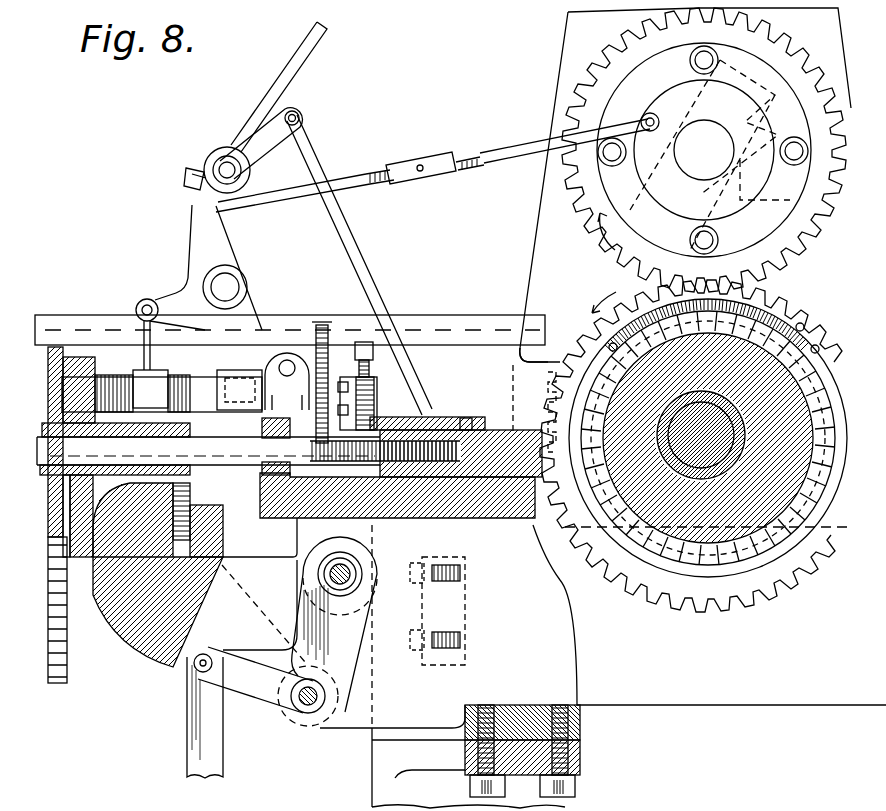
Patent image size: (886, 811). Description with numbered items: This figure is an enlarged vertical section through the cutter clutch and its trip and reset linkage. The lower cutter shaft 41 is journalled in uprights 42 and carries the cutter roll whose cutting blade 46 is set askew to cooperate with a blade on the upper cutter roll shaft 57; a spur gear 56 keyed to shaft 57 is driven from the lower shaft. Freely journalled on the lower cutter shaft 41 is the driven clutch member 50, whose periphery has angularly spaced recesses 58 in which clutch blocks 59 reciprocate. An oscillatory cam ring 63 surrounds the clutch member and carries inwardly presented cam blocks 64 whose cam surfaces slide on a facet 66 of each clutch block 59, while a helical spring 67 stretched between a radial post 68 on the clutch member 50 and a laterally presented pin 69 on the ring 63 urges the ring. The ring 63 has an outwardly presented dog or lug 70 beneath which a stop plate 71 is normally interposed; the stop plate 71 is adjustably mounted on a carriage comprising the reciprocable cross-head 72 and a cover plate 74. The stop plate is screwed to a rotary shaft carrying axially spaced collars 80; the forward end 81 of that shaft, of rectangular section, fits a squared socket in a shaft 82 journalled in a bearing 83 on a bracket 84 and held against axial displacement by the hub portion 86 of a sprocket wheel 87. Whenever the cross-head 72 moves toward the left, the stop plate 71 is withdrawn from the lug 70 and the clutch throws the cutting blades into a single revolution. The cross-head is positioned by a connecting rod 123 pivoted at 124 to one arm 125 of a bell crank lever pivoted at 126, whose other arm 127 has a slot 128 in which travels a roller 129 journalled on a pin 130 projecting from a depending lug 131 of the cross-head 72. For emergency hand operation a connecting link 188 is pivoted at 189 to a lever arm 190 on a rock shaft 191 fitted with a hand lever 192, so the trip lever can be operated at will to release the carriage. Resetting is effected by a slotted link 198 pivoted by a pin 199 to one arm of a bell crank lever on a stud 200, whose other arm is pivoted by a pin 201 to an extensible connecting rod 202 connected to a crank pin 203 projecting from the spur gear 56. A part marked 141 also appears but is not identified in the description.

The lower cutter shaft 41 is at (818, 572).
The uprights 42 is at (553, 107).
The cutting blade 46 is at (821, 350).
The driven clutch member 50 is at (690, 590).
The spur gear 56 is at (704, 150).
The upper cutter roll shaft 57 is at (704, 150).
The peripheral grooves or recesses 58 is at (575, 388).
The clutch blocks 59 is at (730, 592).
The oscillatory cam ring 63 is at (815, 558).
The cam blocks 64 is at (655, 585).
The facet 66 is at (626, 570).
The helical spring 67 is at (782, 290).
The radial post 68 is at (574, 309).
The laterally presented pin 69 is at (806, 300).
The dog or lug 70 is at (510, 362).
The stop plate 71 is at (495, 400).
The reciprocable cross-head 72 is at (296, 522).
The cover plate 74 is at (466, 400).
The collars 80 is at (264, 492).
The forward end 81 is at (232, 448).
The shaft 82 is at (56, 512).
The bearing 83 is at (92, 546).
The bracket 84 is at (133, 632).
The hub portion 86 is at (80, 520).
The sprocket wheel 87 is at (50, 542).
The connecting rod 123 is at (196, 726).
The pivot 124 is at (196, 676).
The arm of bell crank lever 125 is at (272, 712).
The pivot of bell crank lever 126 is at (312, 714).
The other arm of bell crank lever 127 is at (360, 672).
The slot 128 is at (320, 584).
The roller 129 is at (326, 570).
The pin 130 is at (358, 584).
The depending lug 131 is at (415, 560).
The bar 141 is at (507, 322).
The connecting link 188 is at (353, 238).
The pivot connection 189 is at (299, 115).
The lever arm 190 is at (284, 150).
The rock shaft 191 is at (216, 155).
The hand lever 192 is at (285, 70).
The slotted link 198 is at (133, 360).
The pin 199 is at (146, 299).
The stud 200 is at (226, 308).
The pin 201 is at (196, 226).
The extensible connecting rod 202 is at (403, 163).
The crank pin 203 is at (642, 118).